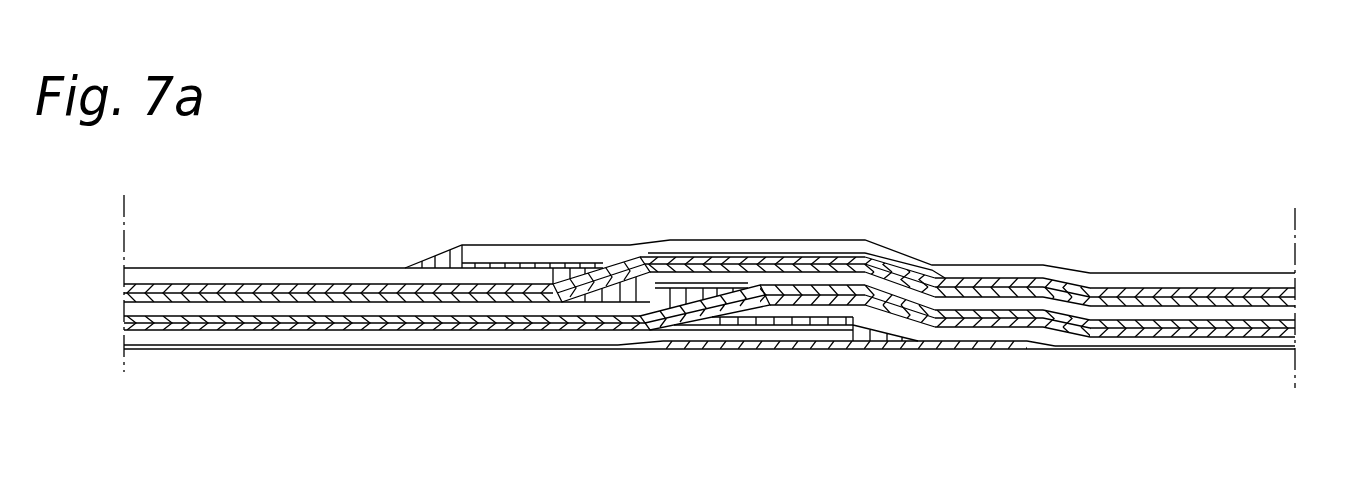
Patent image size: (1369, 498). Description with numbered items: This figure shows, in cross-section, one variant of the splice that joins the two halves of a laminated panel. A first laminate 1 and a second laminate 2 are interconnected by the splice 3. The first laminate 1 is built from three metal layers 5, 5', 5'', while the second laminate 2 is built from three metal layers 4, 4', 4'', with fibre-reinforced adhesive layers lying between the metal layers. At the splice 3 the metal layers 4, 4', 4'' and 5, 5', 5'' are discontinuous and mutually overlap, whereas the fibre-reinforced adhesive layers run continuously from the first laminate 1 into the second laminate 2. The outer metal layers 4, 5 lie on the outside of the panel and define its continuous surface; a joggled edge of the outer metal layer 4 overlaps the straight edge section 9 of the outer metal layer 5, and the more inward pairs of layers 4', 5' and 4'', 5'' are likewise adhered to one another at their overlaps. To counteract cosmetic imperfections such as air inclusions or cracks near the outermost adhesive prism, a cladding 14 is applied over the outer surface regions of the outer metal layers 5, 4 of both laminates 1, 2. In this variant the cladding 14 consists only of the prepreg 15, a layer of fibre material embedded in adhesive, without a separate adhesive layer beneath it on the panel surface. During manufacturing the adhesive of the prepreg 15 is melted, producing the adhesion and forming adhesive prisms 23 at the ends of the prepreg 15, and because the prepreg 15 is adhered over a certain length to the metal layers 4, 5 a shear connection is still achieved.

The first laminate 1 is at (333, 262).
The second laminate 2 is at (1150, 270).
The splice 3 is at (768, 228).
The outer metal layer of second laminate 4 is at (1205, 356).
The metal layer of second laminate 4' is at (1229, 309).
The metal layer of second laminate 4'' is at (1227, 267).
The outer metal layer of first laminate 5 is at (345, 355).
The metal layer of first laminate 5' is at (349, 300).
The metal layer of first laminate 5'' is at (299, 257).
The edge section 9 is at (828, 333).
The cladding 14 is at (817, 352).
The prepreg 15 is at (928, 345).
The adhesive prisms 23 is at (663, 347).